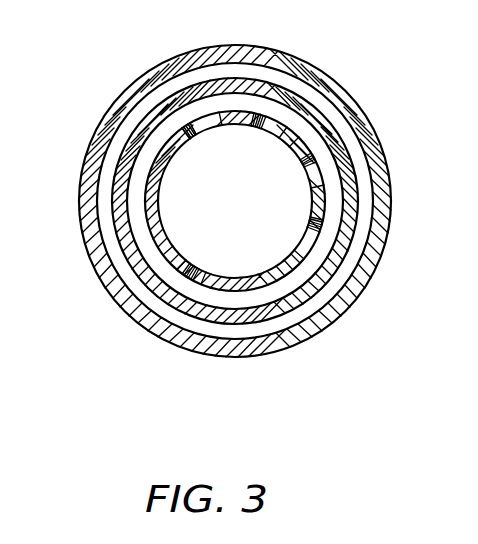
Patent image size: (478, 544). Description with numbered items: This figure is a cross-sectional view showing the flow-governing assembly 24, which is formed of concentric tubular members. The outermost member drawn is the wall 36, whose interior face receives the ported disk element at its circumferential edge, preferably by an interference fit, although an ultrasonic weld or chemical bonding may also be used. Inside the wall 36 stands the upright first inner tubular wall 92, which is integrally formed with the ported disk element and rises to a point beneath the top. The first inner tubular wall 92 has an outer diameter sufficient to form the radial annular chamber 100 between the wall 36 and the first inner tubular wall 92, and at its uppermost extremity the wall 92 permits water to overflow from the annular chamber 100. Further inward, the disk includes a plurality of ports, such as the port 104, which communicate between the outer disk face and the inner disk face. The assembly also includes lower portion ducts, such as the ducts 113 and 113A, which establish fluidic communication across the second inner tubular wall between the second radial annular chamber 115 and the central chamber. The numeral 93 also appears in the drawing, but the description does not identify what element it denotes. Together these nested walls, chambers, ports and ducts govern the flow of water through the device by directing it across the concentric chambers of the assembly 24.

The flow-governing assembly 24 is at (323, 71).
The radial annular chamber 100 is at (337, 119).
The wall 36 is at (379, 152).
The first inner tubular wall 92 is at (353, 193).
The duct 113 is at (323, 242).
The seam 93 is at (335, 264).
The duct 113A is at (157, 167).
The second radial annular chamber 115 is at (163, 273).
The port 104 is at (459, 368).